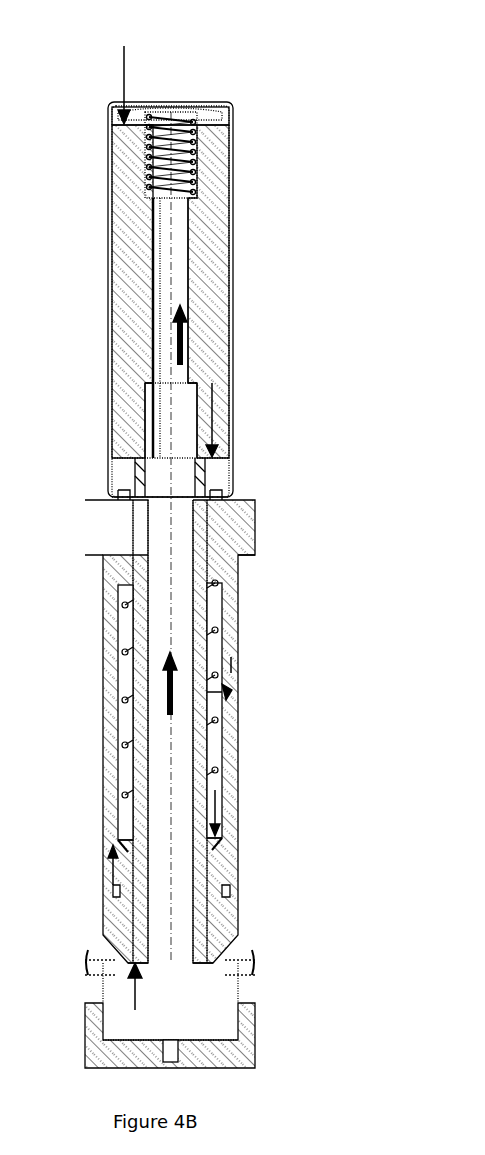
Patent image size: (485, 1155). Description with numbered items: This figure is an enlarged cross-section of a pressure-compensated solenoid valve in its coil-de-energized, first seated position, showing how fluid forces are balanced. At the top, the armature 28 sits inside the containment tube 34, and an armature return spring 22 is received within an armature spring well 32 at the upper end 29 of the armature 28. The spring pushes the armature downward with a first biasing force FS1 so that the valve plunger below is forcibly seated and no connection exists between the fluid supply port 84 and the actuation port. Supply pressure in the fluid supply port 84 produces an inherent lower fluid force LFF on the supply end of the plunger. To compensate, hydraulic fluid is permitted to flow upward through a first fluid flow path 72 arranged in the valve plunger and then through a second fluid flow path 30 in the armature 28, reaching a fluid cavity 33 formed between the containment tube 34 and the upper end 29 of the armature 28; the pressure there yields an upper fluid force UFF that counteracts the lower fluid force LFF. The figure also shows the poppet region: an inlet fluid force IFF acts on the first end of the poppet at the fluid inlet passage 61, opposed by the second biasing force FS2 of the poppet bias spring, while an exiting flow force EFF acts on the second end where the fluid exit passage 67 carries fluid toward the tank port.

The armature return spring 22 is at (195, 167).
The armature 28 is at (138, 225).
The upper end of the armature 29 is at (127, 133).
The second fluid flow path 30 is at (183, 282).
The armature spring well 32 is at (153, 166).
The fluid cavity 33 is at (215, 118).
The containment tube 34 is at (232, 266).
The first fluid flow path 72 is at (170, 545).
The fluid exit passage 67 is at (232, 690).
The fluid inlet passage 61 is at (118, 840).
The fluid supply port 84 is at (212, 1021).
The upper fluid force UFF is at (126, 62).
The first biasing force FS1 is at (215, 393).
The exiting flow force EFF is at (233, 670).
The second biasing force FS2 is at (216, 800).
The inlet fluid force IFF is at (112, 874).
The lower fluid force LFF is at (135, 990).